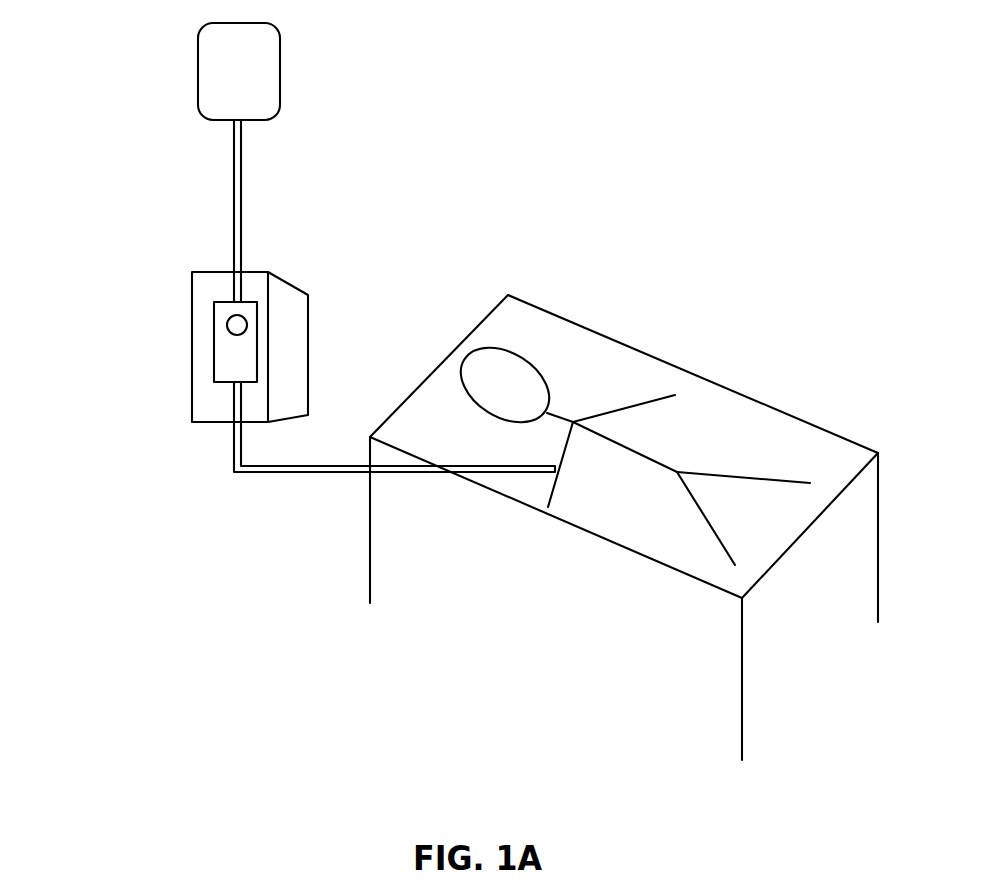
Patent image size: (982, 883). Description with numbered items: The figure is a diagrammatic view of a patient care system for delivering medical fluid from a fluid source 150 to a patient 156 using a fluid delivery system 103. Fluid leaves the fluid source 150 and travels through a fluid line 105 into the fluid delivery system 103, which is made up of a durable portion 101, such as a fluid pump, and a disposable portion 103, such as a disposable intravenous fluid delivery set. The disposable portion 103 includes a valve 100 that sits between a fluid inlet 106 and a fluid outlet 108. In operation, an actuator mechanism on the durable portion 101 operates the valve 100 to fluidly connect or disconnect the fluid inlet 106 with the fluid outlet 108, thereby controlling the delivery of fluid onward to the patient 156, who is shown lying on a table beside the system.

The fluid source 150 is at (280, 67).
The fluid line 105 is at (242, 159).
The fluid inlet 106 is at (240, 287).
The durable portion 101 is at (283, 317).
The fluid delivery system 103 is at (205, 260).
The valve 100 is at (228, 321).
The fluid outlet 108 is at (233, 402).
The patient 156 is at (655, 445).